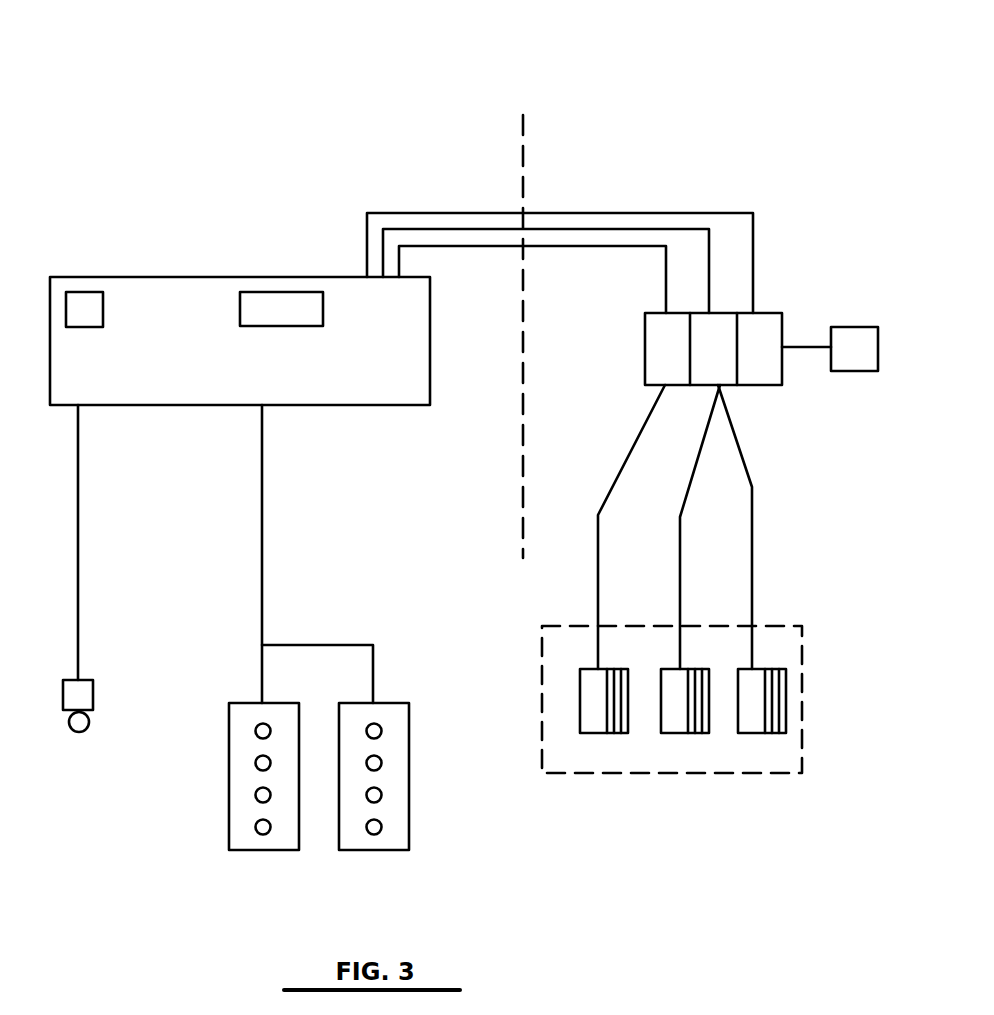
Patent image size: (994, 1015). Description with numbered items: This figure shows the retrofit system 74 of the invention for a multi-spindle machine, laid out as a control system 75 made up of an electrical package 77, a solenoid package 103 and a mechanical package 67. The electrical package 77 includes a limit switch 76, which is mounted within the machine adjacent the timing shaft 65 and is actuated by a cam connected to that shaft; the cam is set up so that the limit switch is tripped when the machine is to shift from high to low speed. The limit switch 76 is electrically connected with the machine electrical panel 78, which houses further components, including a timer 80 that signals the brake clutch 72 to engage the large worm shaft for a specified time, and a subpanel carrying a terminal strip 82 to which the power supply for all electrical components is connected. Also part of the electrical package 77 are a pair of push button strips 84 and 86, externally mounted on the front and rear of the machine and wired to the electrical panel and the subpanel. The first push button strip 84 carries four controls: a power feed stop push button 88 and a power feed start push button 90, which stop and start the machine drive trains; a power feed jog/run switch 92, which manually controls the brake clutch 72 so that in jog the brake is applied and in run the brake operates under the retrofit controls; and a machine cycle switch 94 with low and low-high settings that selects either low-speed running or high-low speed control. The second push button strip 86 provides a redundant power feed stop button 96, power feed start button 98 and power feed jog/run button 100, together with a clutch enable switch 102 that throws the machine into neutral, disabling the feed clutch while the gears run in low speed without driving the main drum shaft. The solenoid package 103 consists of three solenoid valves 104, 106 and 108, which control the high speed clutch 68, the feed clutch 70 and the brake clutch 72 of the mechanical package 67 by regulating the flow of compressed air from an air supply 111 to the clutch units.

The retrofit system 74 is at (168, 56).
The control system 75 is at (529, 98).
The limit switch 76 is at (83, 687).
The electrical package 77 is at (418, 517).
The machine electrical panel 78 is at (182, 383).
The timer 80 is at (85, 303).
The terminal strip 82 is at (290, 300).
The first push button strip 84 is at (243, 717).
The second push button strip 86 is at (394, 716).
The power feed stop push button 88 is at (260, 827).
The power feed start push button 90 is at (260, 795).
The power feed jog/run switch 92 is at (260, 763).
The machine cycle switch 94 is at (260, 731).
The power feed stop button 96 is at (376, 827).
The power feed start button 98 is at (376, 795).
The power feed jog/run button 100 is at (376, 763).
The clutch enable switch 102 is at (376, 731).
The solenoid package 103 is at (624, 413).
The solenoid valve 104 is at (772, 313).
The solenoid valve 106 is at (727, 373).
The solenoid valve 108 is at (665, 347).
The air supply 111 is at (848, 327).
The timing shaft 65 is at (85, 727).
The mechanical package 67 is at (570, 653).
The high speed clutch 68 is at (597, 725).
The feed clutch 70 is at (680, 725).
The brake clutch 72 is at (755, 725).